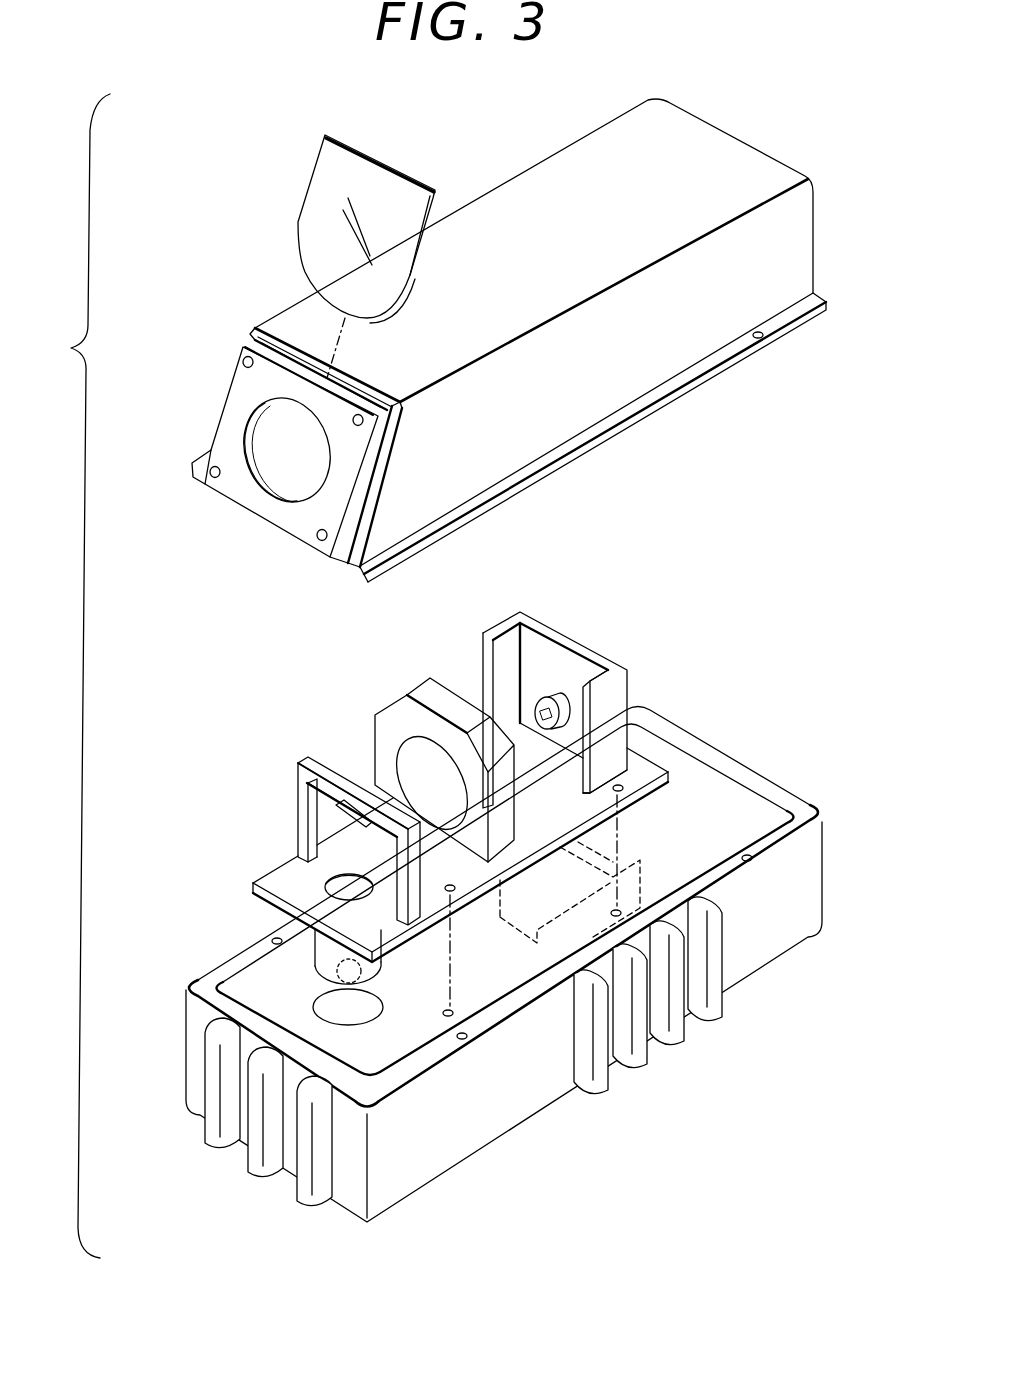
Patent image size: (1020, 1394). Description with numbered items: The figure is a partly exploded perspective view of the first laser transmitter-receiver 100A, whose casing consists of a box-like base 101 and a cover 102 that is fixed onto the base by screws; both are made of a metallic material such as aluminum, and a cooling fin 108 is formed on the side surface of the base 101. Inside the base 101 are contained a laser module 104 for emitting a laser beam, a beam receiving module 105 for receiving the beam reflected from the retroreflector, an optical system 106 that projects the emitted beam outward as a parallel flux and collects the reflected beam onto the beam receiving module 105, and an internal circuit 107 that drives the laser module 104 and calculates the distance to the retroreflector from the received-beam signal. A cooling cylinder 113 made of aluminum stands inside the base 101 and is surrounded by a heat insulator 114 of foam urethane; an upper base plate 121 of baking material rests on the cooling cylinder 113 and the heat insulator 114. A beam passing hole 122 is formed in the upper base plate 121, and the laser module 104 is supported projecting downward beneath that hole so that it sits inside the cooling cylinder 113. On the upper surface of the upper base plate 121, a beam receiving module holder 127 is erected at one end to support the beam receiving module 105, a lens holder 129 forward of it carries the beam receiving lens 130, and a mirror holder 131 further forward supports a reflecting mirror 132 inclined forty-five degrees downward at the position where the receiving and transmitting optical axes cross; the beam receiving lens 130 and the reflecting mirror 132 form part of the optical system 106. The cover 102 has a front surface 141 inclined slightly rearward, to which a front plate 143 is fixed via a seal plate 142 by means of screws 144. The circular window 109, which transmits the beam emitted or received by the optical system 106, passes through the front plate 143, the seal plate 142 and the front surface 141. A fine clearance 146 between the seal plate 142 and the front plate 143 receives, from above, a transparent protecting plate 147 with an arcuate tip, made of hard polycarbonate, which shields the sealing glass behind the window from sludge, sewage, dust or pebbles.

The first laser transmitter-receiver 100A is at (172, 350).
The base 101 is at (501, 989).
The cover 102 is at (613, 383).
The laser module 104 is at (330, 966).
The beam receiving module 105 is at (553, 705).
The optical system 106 is at (465, 771).
The internal circuit 107 is at (640, 860).
The cooling fin 108 is at (642, 1058).
The window 109 is at (293, 470).
The cooling cylinder 113 is at (532, 905).
The heat insulator 114 is at (508, 993).
The upper base plate 121 is at (465, 819).
The beam passing hole 122 is at (342, 887).
The beam receiving module holder 127 is at (606, 694).
The lens holder 129 is at (436, 745).
The beam receiving lens 130 is at (430, 757).
The mirror holder 131 is at (304, 833).
The reflecting mirror 132 is at (345, 816).
The front surface 141 is at (352, 565).
The seal plate 142 is at (253, 331).
The front plate 143 is at (244, 468).
The screws 144 is at (210, 462).
The fine clearance 146 is at (297, 347).
The transparent protecting plate 147 is at (384, 192).